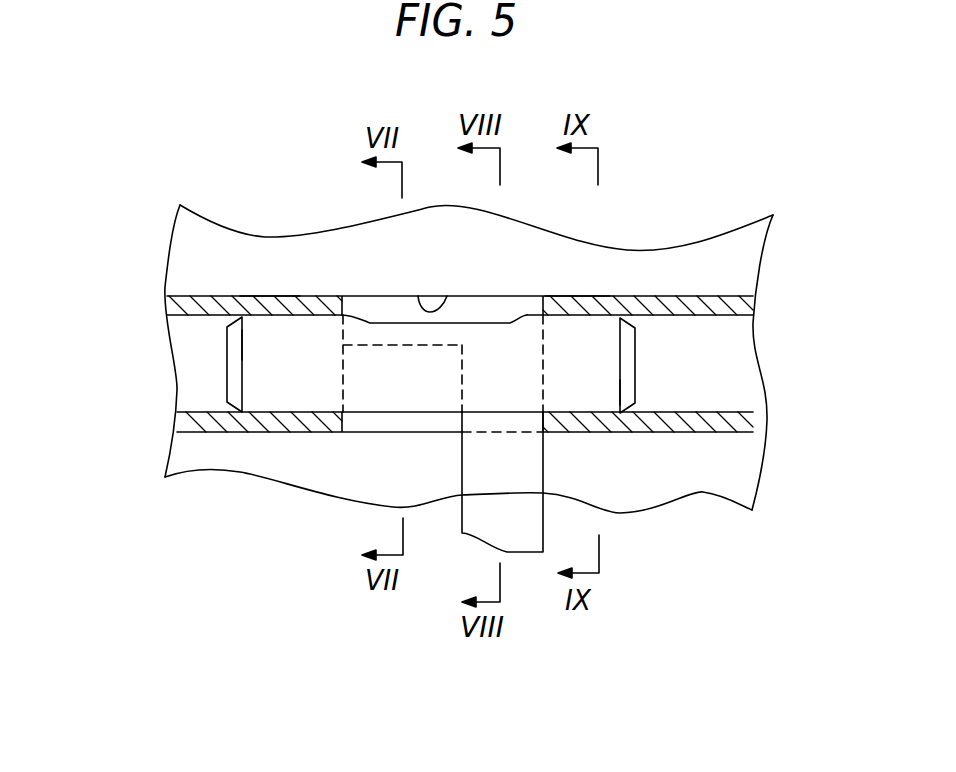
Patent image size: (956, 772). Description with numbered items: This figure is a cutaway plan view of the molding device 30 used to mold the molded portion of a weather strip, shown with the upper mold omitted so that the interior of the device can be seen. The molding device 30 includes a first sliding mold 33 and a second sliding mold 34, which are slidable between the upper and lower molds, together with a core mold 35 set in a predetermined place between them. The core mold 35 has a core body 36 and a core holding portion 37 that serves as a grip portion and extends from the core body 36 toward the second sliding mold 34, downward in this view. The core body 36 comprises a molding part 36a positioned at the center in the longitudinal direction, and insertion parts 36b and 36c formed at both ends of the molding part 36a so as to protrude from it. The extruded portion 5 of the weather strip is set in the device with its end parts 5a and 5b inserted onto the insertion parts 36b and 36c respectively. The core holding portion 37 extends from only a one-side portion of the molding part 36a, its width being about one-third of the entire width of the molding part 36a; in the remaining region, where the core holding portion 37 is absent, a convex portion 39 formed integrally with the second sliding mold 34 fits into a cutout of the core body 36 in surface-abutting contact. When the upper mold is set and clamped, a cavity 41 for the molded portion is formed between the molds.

The molding device 30 is at (135, 162).
The extruded portion 5 is at (222, 296).
The end part 5a is at (273, 296).
The end part 5b is at (575, 296).
The first sliding mold 33 is at (312, 230).
The second sliding mold 34 is at (300, 478).
The core mold 35 is at (661, 361).
The core body 36 is at (215, 384).
The molding part 36a is at (482, 323).
The insertion part 36b is at (255, 343).
The insertion part 36c is at (605, 392).
The core holding portion 37 is at (543, 468).
The convex portion 39 is at (377, 345).
The cavity 41 is at (418, 296).